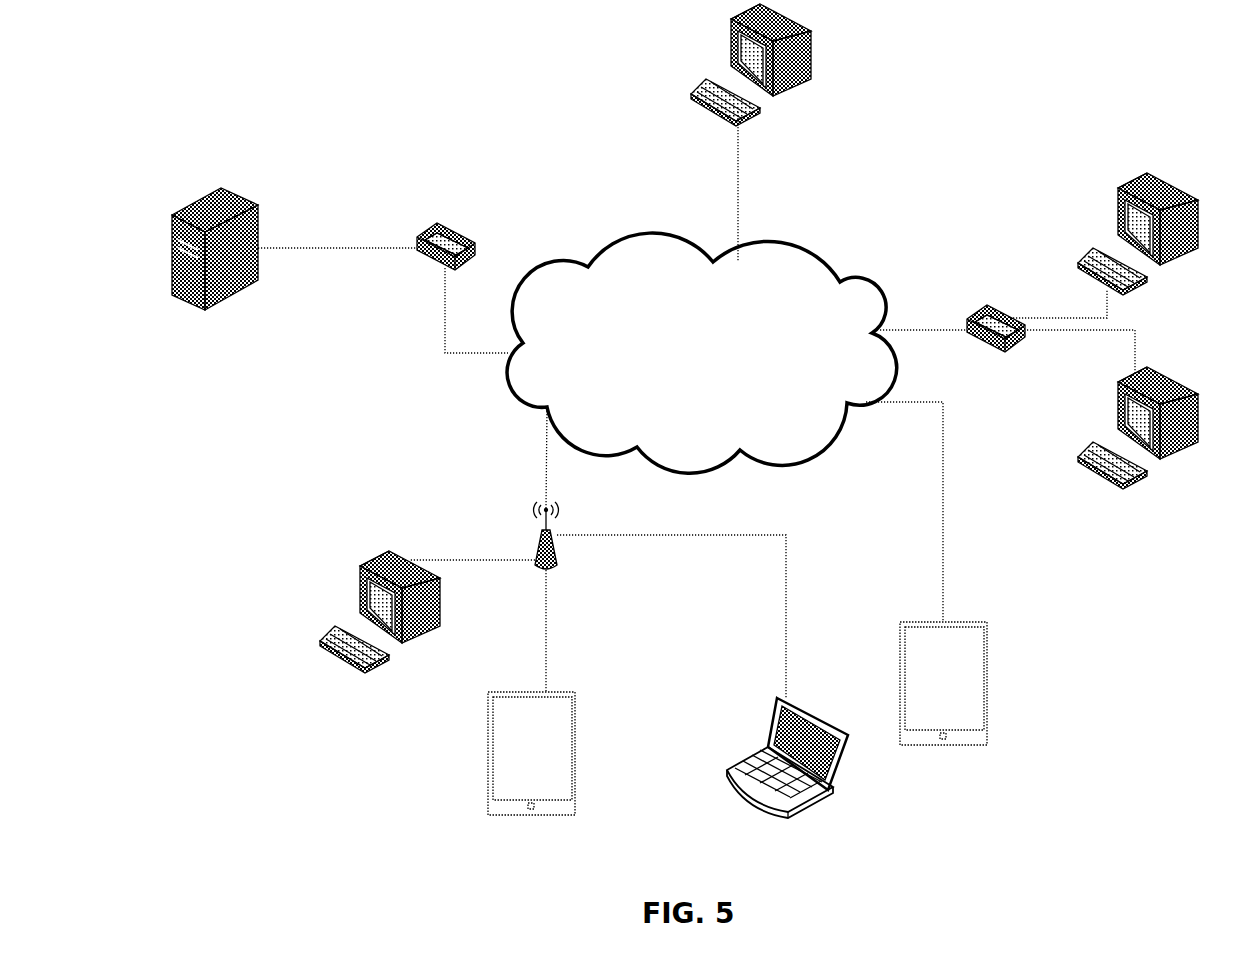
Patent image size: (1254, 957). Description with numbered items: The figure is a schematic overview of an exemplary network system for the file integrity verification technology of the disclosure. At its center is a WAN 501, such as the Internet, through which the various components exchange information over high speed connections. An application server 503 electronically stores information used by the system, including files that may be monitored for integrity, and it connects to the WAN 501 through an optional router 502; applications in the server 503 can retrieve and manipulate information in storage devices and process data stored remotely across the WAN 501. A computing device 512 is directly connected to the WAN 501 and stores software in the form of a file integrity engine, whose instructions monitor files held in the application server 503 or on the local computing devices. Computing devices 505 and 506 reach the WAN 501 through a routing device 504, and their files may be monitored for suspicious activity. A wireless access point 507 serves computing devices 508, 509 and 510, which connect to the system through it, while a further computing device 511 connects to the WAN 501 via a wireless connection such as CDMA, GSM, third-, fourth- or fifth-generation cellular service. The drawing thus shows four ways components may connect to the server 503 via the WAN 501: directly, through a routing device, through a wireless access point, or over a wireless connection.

The WAN 501 is at (702, 365).
The router 502 is at (465, 259).
The application server 503 is at (227, 249).
The routing device 504 is at (1005, 342).
The computing device 505 is at (1141, 240).
The computing device 506 is at (1138, 442).
The wireless access point 507 is at (574, 549).
The computing device 508 is at (380, 612).
The computing device 509 is at (541, 771).
The computing device 510 is at (796, 774).
The computing device 511 is at (954, 704).
The computing device 512 is at (769, 67).